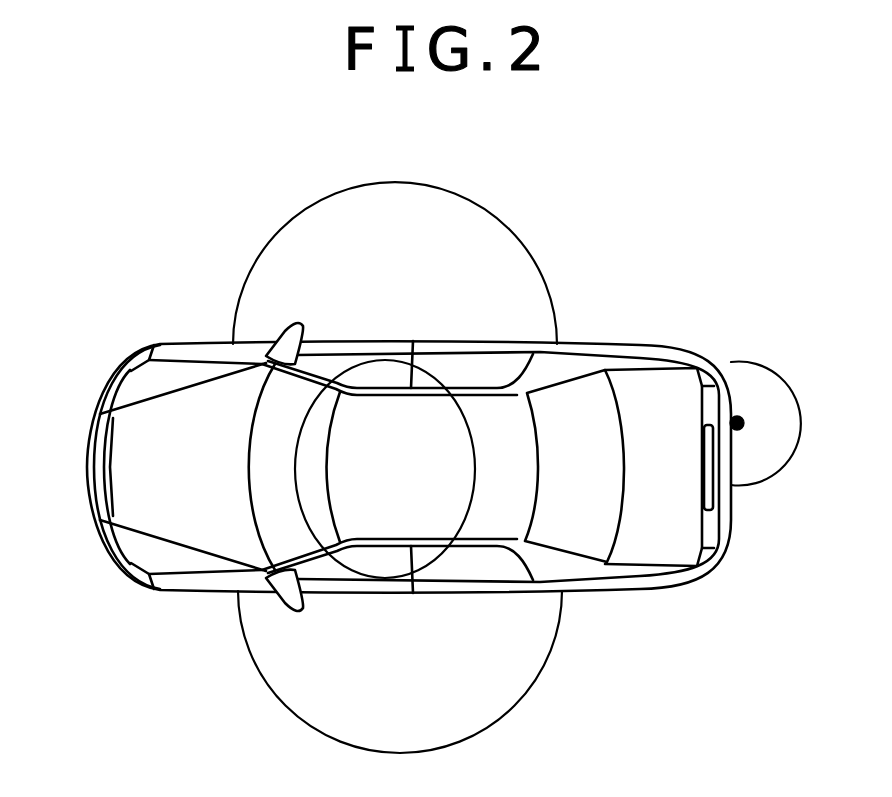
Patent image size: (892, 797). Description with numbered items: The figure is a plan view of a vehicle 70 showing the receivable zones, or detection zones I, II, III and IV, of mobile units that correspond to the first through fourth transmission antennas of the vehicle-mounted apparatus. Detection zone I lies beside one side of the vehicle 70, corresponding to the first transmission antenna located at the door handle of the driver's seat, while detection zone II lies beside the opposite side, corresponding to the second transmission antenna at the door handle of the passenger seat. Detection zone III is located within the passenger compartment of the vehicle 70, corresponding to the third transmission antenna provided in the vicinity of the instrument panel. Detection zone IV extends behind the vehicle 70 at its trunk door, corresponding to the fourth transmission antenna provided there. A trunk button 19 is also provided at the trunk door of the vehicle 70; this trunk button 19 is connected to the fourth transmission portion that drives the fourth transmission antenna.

The vehicle 70 is at (140, 471).
The trunk button 19 is at (742, 432).
The detection zone I is at (307, 263).
The detection zone II is at (317, 674).
The detection zone III is at (450, 448).
The detection zone IV is at (760, 381).